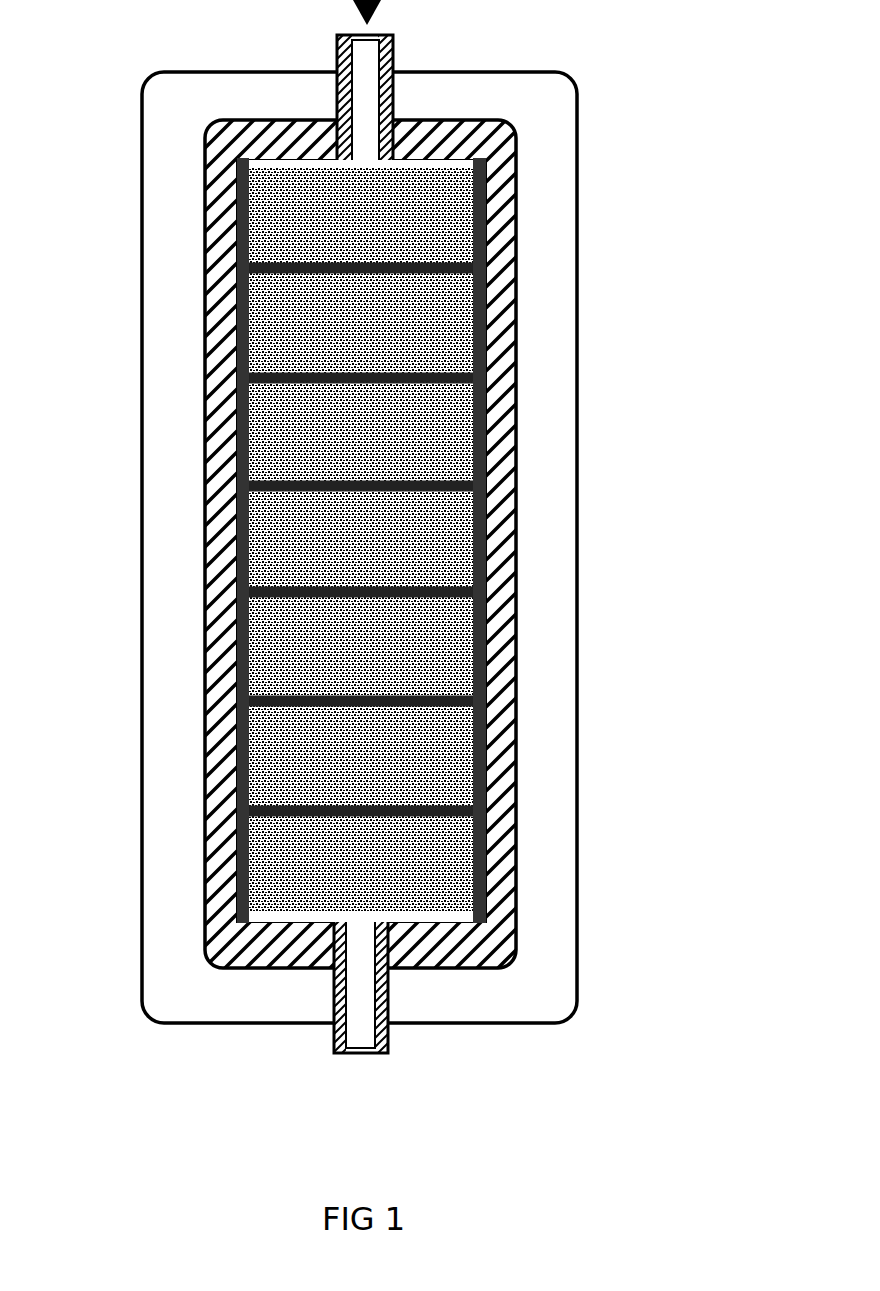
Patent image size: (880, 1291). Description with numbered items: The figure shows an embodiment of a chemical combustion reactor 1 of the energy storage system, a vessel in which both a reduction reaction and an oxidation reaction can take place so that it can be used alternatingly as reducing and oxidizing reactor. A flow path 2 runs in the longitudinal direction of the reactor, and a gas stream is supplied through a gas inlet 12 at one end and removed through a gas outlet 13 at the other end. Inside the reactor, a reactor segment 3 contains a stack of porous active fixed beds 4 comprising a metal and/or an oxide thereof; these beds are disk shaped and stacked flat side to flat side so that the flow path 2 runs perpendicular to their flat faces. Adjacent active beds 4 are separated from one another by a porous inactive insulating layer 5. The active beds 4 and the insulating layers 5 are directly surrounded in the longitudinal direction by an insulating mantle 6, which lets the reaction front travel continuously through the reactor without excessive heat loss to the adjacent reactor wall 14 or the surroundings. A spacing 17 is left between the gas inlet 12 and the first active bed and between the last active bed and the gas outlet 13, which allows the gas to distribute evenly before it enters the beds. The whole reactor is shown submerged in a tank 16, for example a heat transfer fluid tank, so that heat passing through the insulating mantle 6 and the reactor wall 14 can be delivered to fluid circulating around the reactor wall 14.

The chemical combustion reactor 1 is at (385, 528).
The flow path 2 is at (367, 95).
The reactor segment 3 is at (215, 163).
The porous active fixed bed 4 is at (433, 235).
The porous inactive insulating layer 5 is at (363, 372).
The insulating mantle 6 is at (488, 728).
The gas inlet 12 is at (404, 88).
The gas outlet 13 is at (388, 1012).
The reactor wall 14 is at (210, 435).
The tank 16 is at (545, 517).
The spacing 17 is at (363, 157).